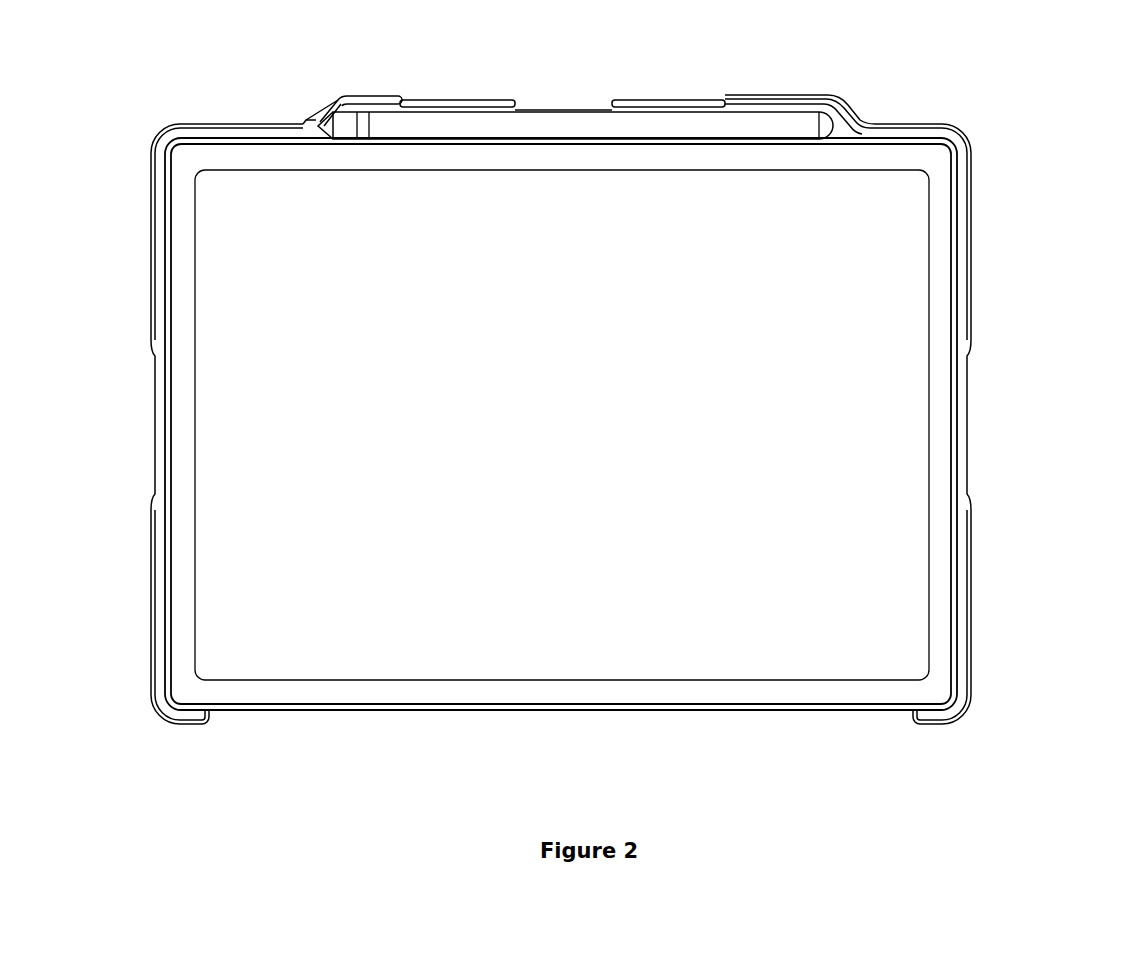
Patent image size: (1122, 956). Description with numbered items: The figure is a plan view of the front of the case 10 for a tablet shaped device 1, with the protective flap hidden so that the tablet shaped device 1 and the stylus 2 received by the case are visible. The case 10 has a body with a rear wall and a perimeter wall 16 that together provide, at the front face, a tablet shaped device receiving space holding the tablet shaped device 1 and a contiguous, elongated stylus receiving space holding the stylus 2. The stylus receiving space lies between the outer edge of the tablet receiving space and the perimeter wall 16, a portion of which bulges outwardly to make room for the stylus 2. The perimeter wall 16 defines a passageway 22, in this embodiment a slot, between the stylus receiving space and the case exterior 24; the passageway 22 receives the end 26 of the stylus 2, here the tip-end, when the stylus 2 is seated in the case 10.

The case 10 is at (1048, 105).
The case exterior 24 is at (160, 65).
The perimeter wall 16 is at (462, 103).
The stylus 2 is at (811, 124).
The end of the stylus 26 is at (320, 122).
The passageway 22 is at (315, 108).
The tablet shaped device 1 is at (573, 444).